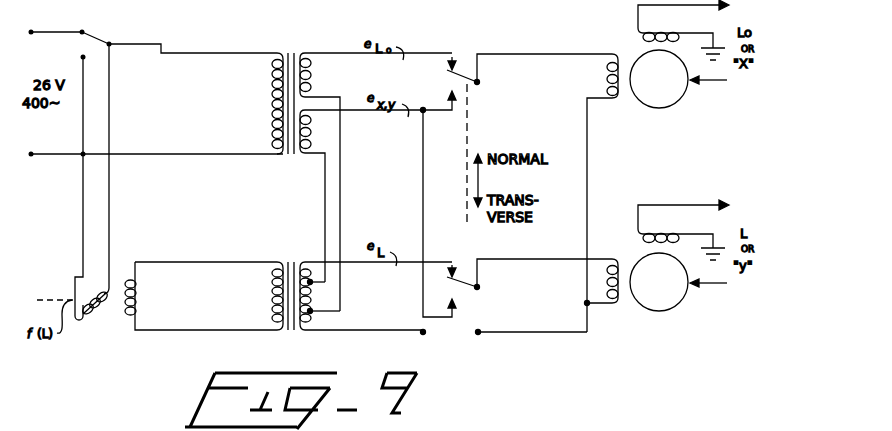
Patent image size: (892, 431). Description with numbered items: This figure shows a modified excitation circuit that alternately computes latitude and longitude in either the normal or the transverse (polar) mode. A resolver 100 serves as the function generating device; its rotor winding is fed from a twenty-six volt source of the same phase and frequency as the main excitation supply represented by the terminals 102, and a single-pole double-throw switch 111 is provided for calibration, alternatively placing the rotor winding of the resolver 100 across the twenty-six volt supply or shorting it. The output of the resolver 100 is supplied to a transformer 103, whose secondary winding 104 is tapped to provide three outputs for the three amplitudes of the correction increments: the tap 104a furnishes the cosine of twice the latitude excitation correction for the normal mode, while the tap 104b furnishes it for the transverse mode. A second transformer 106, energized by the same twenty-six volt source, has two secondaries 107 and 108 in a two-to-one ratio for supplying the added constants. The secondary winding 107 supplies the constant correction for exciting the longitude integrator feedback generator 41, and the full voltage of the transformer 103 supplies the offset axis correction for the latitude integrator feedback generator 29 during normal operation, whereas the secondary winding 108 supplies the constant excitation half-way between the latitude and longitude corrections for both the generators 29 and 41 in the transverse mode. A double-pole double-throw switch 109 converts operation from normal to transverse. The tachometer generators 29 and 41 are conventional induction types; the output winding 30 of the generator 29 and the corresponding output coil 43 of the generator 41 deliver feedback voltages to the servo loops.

The single-pole double-throw switch 111 is at (94, 35).
The resolver 100 is at (104, 318).
The second transformer 106 is at (291, 53).
The secondary winding 107 is at (311, 77).
The secondary winding 108 is at (311, 148).
The double-pole double-throw switch 109 is at (457, 60).
The transformer 103 is at (291, 331).
The secondary winding 104 is at (311, 329).
The tap 104a is at (312, 311).
The tap 104b is at (311, 281).
The terminals 102 is at (477, 338).
The tachometer generator 41 is at (672, 137).
The tachometer output coil 43 is at (658, 32).
The tachometer generator 29 is at (672, 341).
The output winding 30 is at (653, 233).